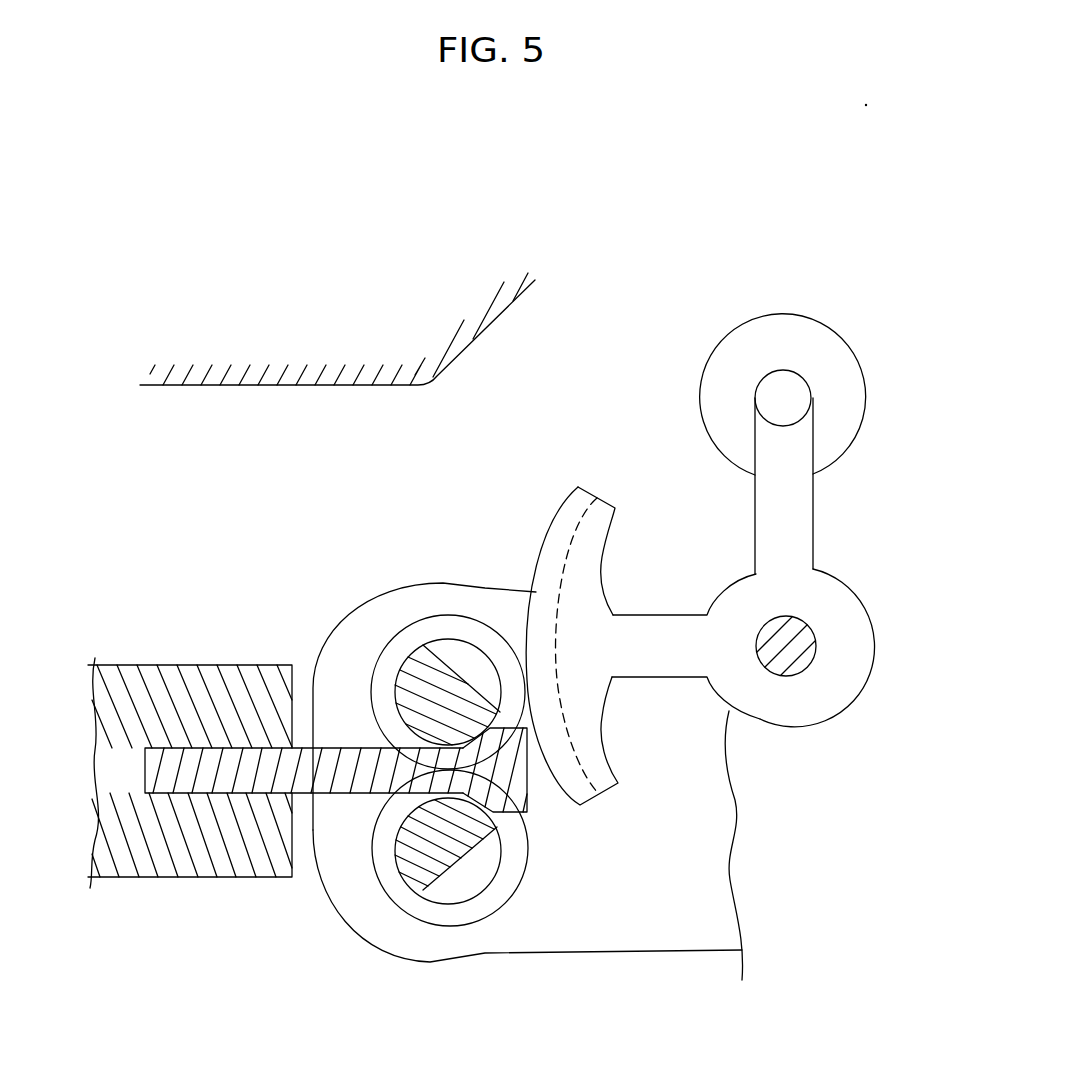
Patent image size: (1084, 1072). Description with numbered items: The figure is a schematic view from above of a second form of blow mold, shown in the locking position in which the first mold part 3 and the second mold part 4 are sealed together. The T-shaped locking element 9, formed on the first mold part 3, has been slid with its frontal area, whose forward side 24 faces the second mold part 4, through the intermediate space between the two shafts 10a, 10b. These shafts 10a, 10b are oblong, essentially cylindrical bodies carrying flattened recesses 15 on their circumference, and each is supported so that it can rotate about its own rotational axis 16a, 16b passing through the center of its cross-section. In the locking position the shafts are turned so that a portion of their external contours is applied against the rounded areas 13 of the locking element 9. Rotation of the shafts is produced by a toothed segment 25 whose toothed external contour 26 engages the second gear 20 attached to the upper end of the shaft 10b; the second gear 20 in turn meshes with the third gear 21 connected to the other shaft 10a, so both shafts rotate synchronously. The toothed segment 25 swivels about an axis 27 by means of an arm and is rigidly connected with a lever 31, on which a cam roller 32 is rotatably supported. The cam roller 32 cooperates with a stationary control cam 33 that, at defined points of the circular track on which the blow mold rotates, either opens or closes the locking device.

The first mold part 3 is at (183, 857).
The second mold part 4 is at (423, 602).
The locking element 9 is at (543, 797).
The shaft 10a is at (450, 848).
The shaft 10b is at (415, 678).
The rounded areas 13 is at (448, 692).
The recesses 15 is at (468, 658).
The rotational axis 16a is at (425, 860).
The rotational axis 16b is at (435, 660).
The second gear 20 is at (405, 642).
The third gear 21 is at (406, 901).
The forward side 24 is at (527, 797).
The toothed segment 25 is at (638, 476).
The toothed external contour 26 is at (548, 538).
The axis 27 is at (787, 645).
The lever 31 is at (787, 527).
The cam roller 32 is at (820, 355).
The control cam 33 is at (380, 350).